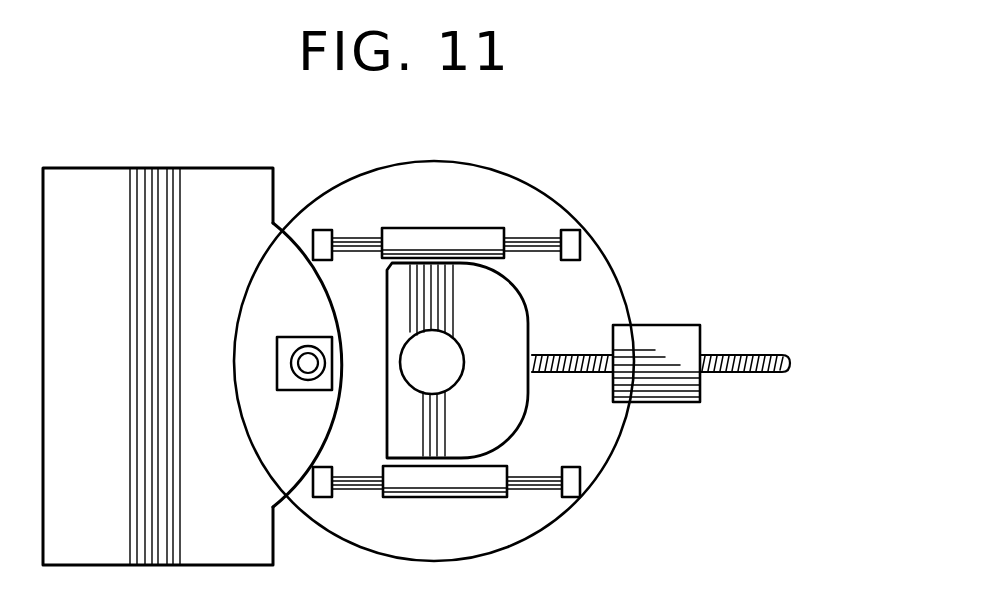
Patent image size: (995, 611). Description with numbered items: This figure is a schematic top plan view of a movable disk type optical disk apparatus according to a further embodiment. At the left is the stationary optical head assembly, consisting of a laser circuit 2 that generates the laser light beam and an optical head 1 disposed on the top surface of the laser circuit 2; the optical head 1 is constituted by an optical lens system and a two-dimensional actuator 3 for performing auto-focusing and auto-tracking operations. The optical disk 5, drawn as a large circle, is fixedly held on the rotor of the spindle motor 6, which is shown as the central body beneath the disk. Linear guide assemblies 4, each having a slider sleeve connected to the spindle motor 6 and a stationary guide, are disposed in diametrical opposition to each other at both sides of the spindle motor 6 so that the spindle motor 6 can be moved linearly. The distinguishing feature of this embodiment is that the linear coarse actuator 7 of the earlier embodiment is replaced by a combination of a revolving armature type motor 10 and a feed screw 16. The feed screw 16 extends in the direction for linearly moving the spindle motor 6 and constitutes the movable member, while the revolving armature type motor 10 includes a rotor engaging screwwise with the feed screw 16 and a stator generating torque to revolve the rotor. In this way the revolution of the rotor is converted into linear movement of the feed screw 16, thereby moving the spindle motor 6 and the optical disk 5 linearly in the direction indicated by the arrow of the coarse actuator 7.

The optical head 1 is at (308, 357).
The laser circuit 2 is at (165, 175).
The two-dimensional actuator 3 is at (298, 392).
The linear guide assembly 4 is at (400, 233).
The optical disk 5 is at (572, 210).
The spindle motor 6 is at (508, 412).
The coarse actuator 7 is at (678, 410).
The revolving armature type motor 10 is at (678, 332).
The feed screw 16 is at (790, 362).